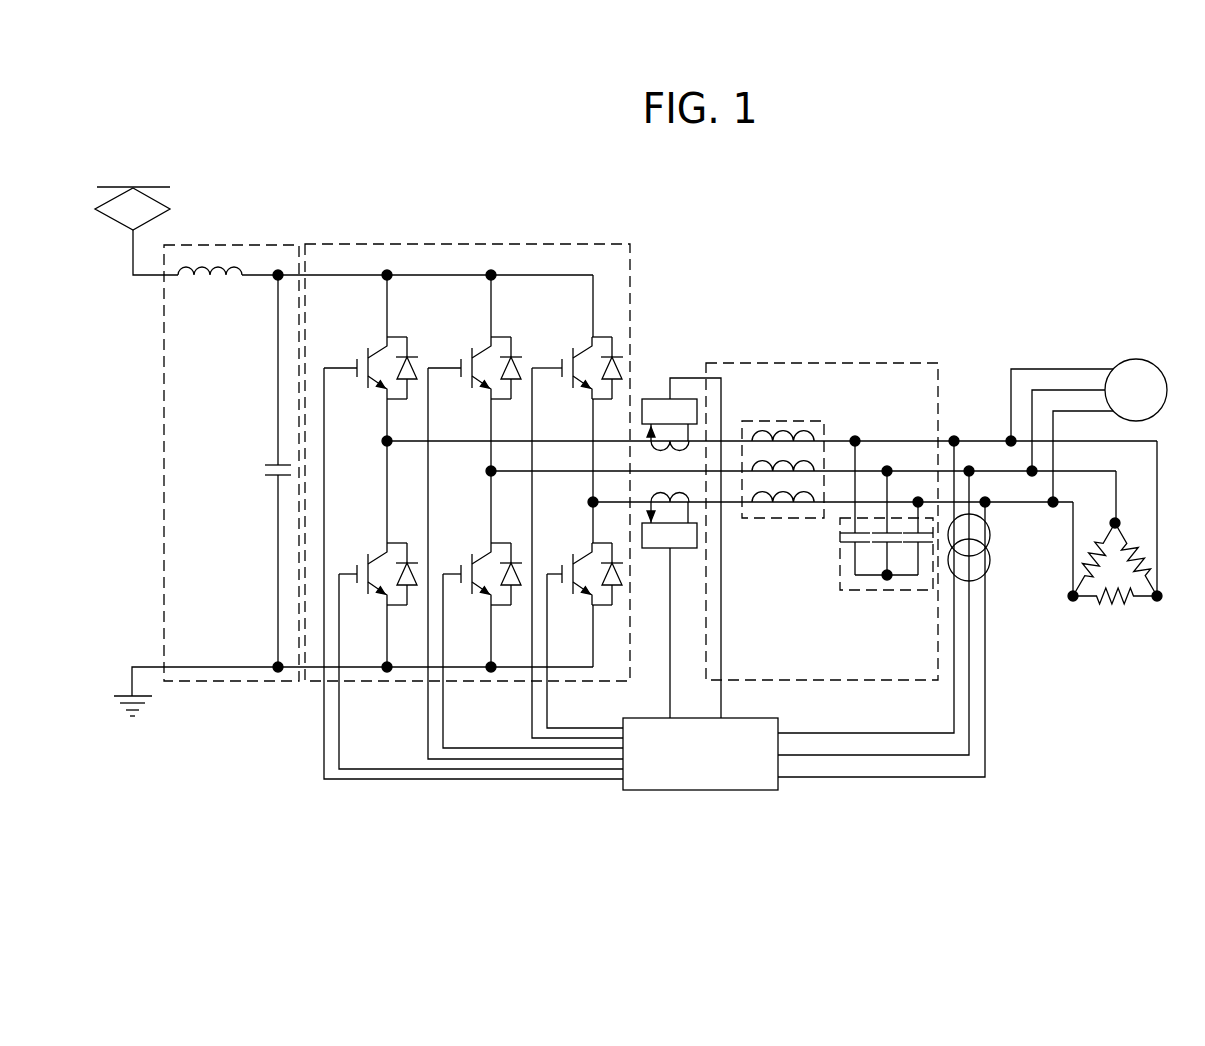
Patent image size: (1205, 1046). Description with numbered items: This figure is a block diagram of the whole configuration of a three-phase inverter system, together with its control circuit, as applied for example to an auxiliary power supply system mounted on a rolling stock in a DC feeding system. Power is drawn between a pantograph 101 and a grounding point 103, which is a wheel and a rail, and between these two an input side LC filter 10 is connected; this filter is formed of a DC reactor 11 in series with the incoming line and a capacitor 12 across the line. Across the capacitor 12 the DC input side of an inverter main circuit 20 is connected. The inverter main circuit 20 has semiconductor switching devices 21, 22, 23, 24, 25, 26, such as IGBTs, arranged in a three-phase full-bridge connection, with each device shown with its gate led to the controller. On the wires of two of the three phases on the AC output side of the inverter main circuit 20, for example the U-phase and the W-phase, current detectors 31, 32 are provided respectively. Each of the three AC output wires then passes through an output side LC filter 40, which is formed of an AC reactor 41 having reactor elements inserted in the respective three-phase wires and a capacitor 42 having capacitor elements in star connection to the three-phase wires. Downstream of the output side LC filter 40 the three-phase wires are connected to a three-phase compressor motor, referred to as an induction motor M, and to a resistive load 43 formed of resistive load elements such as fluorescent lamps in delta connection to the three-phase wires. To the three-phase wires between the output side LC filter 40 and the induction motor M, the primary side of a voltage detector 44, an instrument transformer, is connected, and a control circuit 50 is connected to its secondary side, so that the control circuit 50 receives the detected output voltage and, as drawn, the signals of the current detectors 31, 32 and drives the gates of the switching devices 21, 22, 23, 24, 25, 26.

The pantograph 101 is at (118, 232).
The grounding point 103 is at (118, 685).
The input side LC filter 10 is at (231, 432).
The DC reactor 11 is at (210, 290).
The capacitor 12 is at (258, 468).
The inverter main circuit 20 is at (454, 431).
The semiconductor switching device 21 is at (360, 345).
The semiconductor switching device 22 is at (362, 552).
The semiconductor switching device 23 is at (463, 345).
The semiconductor switching device 24 is at (463, 552).
The semiconductor switching device 25 is at (563, 345).
The semiconductor switching device 26 is at (562, 552).
The current detector 31 is at (655, 408).
The current detector 32 is at (663, 540).
The output side LC filter 40 is at (822, 491).
The AC reactor 41 is at (788, 421).
The capacitor 42 is at (840, 568).
The resistive load 43 is at (1096, 610).
The voltage detector 44 is at (1000, 548).
The control circuit 50 is at (697, 780).
The induction motor M is at (1140, 360).